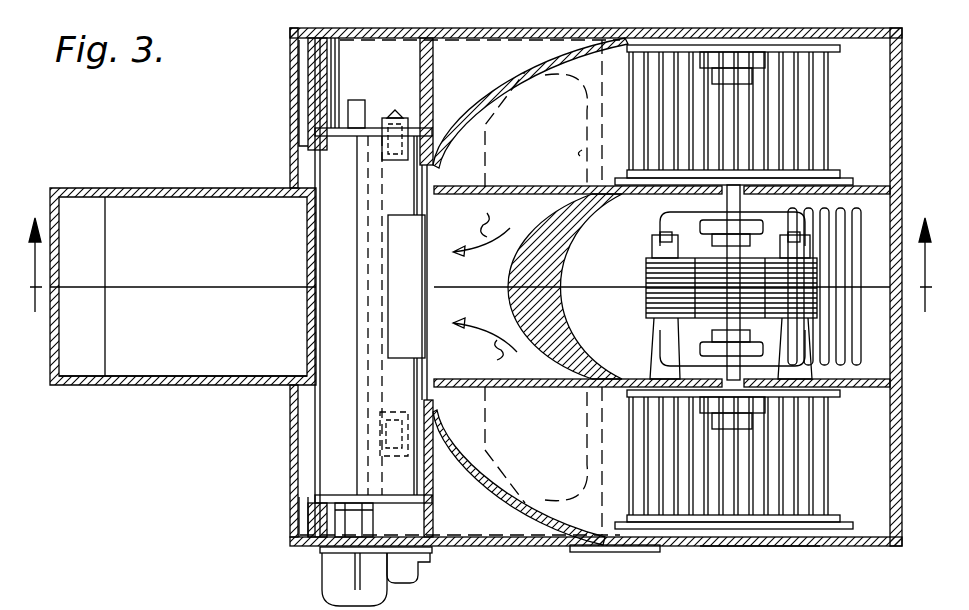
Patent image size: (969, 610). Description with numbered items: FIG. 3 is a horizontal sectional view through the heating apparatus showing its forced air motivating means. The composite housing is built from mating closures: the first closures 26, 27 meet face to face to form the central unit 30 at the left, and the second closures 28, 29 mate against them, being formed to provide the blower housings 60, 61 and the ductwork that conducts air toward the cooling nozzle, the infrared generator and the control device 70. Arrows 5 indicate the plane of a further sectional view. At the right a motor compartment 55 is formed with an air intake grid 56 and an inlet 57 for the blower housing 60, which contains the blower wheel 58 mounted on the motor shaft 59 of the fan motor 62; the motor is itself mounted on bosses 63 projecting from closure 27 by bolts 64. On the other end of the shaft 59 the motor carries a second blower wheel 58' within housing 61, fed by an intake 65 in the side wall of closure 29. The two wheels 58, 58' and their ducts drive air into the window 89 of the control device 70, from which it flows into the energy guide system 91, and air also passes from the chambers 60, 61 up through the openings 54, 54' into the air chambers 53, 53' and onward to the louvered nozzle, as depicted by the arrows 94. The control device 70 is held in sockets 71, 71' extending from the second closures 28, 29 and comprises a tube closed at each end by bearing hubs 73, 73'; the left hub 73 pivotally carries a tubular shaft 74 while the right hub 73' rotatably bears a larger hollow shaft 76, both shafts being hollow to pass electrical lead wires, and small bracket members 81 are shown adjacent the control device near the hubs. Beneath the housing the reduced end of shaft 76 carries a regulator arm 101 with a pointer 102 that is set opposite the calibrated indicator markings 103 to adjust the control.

The section line 5- 5 is at (479, 281).
The first closure 26 is at (258, 200).
The first closure 27 is at (92, 386).
The second closure 28 is at (300, 80).
The second closure 29 is at (290, 520).
The central unit 30 is at (122, 178).
The air chamber 53 is at (524, 219).
The air chamber 53' is at (521, 498).
The opening 54 is at (553, 113).
The opening 54' is at (555, 461).
The motor compartment 55 is at (578, 230).
The air intake grid 56 is at (876, 232).
The inlet 57 is at (600, 185).
The blower wheel 58 is at (742, 115).
The blower wheel 58' is at (745, 459).
The motor shaft 59 is at (722, 202).
The blower housing 60 is at (878, 60).
The blower housing 61 is at (878, 420).
The fan motor 62 is at (645, 300).
The bosses 63 is at (660, 337).
The bolts 64 is at (862, 228).
The intake 65 is at (762, 548).
The control device 70 is at (328, 438).
The socket 71 is at (266, 93).
The socket 71' is at (260, 507).
The bearing hub 73 is at (373, 94).
The bearing hub 73' is at (401, 513).
The tubular shaft 74 is at (358, 86).
The hollow shaft 76 is at (362, 525).
The clip bracket 81 is at (410, 108).
The window opening 89 is at (392, 232).
The energy guide system 91 is at (165, 222).
The arrows 94 is at (484, 284).
The regulator arm 101 is at (340, 575).
The pointer 102 is at (415, 562).
The calibrated indicator markings 103 is at (645, 553).